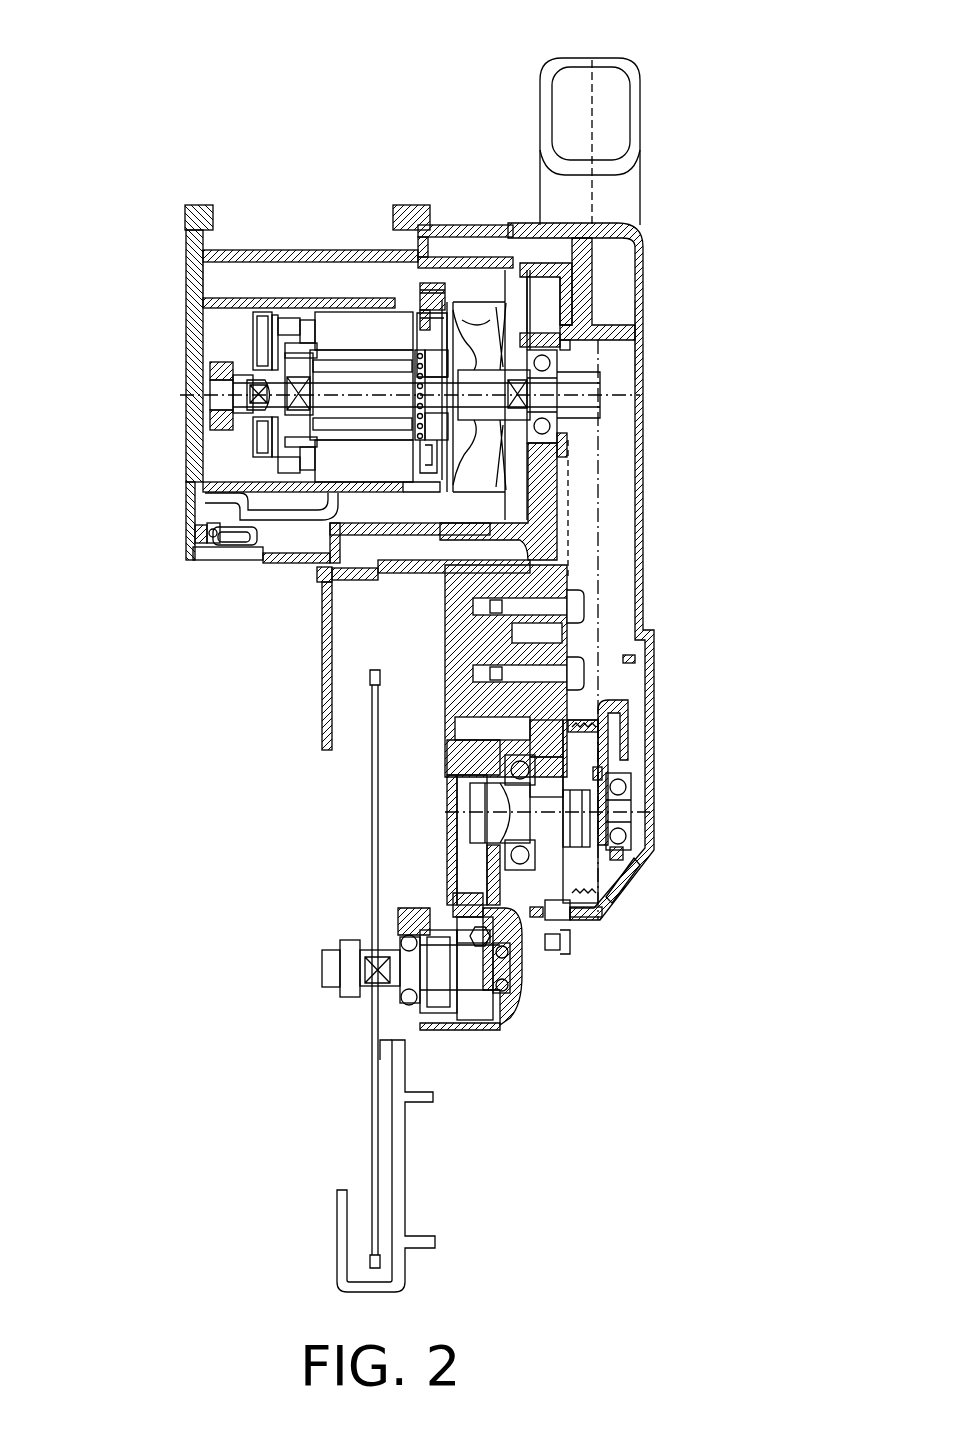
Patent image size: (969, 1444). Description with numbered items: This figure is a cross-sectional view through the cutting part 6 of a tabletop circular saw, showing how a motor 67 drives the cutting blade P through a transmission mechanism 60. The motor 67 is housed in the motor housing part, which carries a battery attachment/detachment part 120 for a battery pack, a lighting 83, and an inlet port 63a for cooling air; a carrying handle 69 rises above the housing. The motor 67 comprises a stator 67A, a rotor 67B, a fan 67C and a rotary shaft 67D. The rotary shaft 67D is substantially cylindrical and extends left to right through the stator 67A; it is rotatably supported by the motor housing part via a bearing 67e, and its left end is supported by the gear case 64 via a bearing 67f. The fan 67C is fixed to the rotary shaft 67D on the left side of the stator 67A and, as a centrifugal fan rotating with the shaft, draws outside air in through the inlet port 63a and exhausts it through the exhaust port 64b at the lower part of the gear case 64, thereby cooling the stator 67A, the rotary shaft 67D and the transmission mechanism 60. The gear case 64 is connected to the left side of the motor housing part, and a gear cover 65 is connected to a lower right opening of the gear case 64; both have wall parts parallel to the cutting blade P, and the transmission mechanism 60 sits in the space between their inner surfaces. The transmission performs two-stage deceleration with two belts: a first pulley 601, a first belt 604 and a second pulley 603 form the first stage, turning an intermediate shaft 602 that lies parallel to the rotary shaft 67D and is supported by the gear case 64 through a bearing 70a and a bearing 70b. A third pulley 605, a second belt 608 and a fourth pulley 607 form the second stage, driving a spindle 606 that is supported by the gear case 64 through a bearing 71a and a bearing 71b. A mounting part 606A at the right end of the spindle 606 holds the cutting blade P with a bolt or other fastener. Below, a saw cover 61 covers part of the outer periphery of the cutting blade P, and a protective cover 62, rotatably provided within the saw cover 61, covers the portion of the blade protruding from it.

The cutting part 6 is at (112, 80).
The carrying handle 69 is at (600, 66).
The transmission mechanism 60 is at (617, 352).
The gear cover 65 is at (644, 333).
The gear case 64 is at (535, 226).
The exhaust port 64b is at (580, 912).
The inlet port 63a is at (192, 455).
The battery attachment/detachment part 120 is at (232, 205).
The lighting 83 is at (216, 545).
The motor 67 is at (480, 103).
The stator 67A is at (330, 333).
The rotor 67B is at (356, 383).
The fan 67C is at (495, 300).
The rotary shaft 67D is at (437, 383).
The bearing 67e is at (210, 386).
The bearing 67f is at (472, 317).
The first pulley 601 is at (600, 378).
The first belt 604 is at (592, 488).
The second pulley 603 is at (583, 748).
The intermediate shaft 602 is at (548, 800).
The saw cover 61 is at (322, 676).
The bearing 70a is at (622, 790).
The bearing 70b is at (455, 760).
The second belt 608 is at (466, 876).
The third pulley 605 is at (517, 915).
The spindle 606 is at (447, 1007).
The mounting part 606A is at (362, 960).
The bearing 71a is at (497, 1004).
The bearing 71b is at (400, 999).
The fourth pulley 607 is at (490, 1020).
The cutting blade P is at (370, 1077).
The protective cover 62 is at (340, 1258).